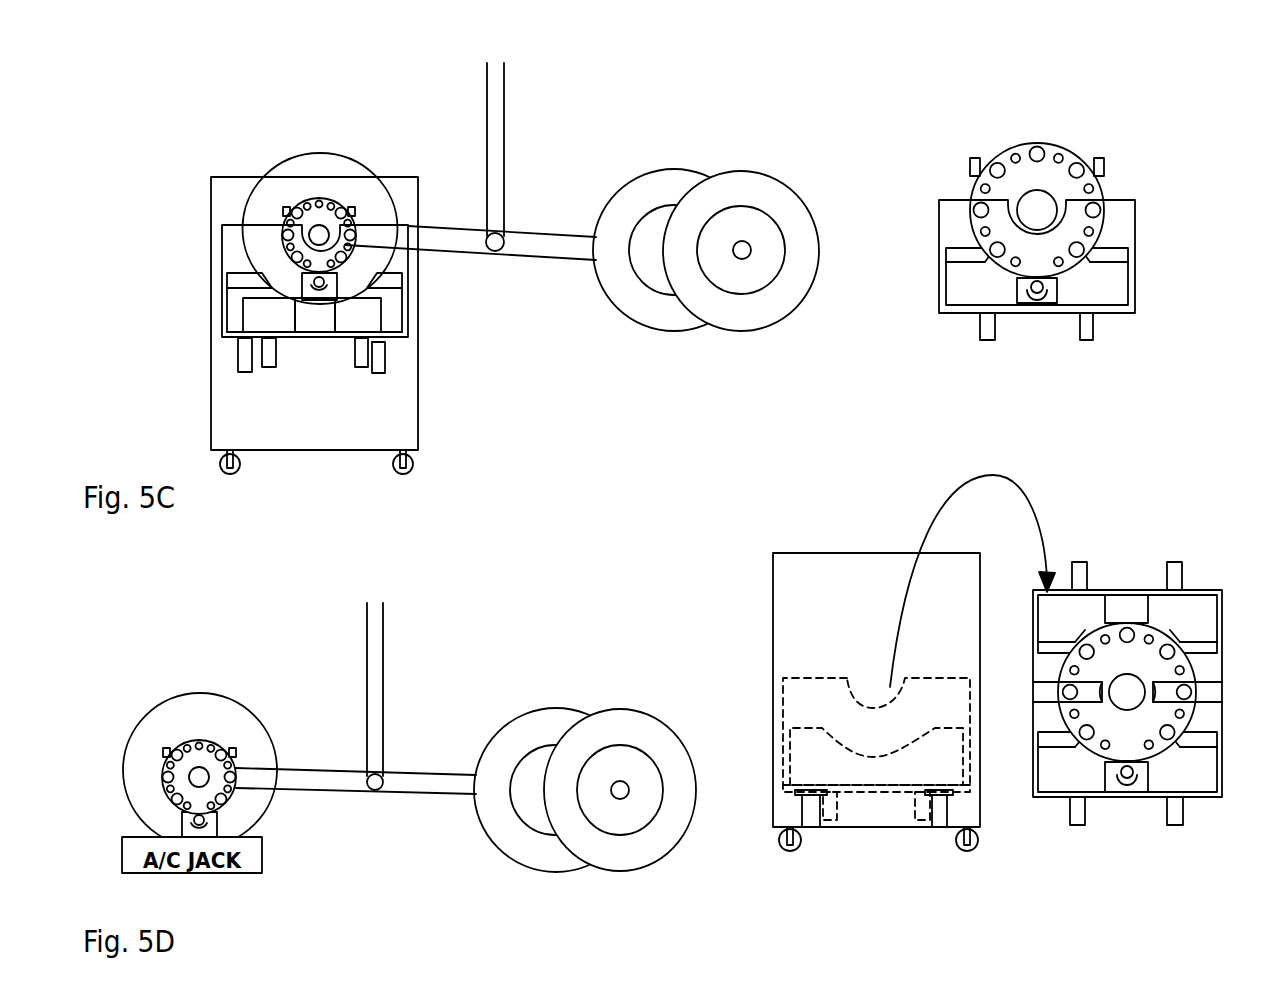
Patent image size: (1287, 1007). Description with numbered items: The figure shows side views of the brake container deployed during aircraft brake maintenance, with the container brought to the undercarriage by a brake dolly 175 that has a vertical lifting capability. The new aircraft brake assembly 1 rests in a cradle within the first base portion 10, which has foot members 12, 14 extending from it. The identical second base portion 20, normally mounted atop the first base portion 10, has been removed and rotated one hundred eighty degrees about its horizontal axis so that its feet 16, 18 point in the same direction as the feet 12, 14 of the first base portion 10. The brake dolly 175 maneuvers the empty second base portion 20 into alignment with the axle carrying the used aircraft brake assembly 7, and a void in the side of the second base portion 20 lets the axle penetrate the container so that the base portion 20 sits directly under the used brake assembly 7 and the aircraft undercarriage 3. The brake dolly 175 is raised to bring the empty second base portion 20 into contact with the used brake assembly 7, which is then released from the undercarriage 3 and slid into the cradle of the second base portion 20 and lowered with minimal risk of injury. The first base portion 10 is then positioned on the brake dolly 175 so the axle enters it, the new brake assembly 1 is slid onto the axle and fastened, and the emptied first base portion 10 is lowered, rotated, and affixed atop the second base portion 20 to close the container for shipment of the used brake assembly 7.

In FIG. 5C, the new aircraft brake assembly 1 is at (315, 198).
In FIG. 5D, the new aircraft brake assembly 1 is at (213, 737).
In FIG. 5C, the aircraft undercarriage 3 is at (1058, 143).
In FIG. 5D, the aircraft undercarriage 3 is at (1131, 748).
In FIG. 5C, the used aircraft brake assembly 7 is at (525, 108).
In FIG. 5D, the used aircraft brake assembly 7 is at (445, 697).
In FIG. 5C, the first base portion 10 is at (222, 298).
In FIG. 5D, the first base portion 10 is at (1208, 588).
In FIG. 5C, the foot member 12 is at (268, 368).
In FIG. 5D, the foot member 12 is at (1078, 557).
In FIG. 5C, the foot member 14 is at (375, 373).
In FIG. 5D, the foot member 14 is at (1172, 558).
In FIG. 5C, the foot member 16 is at (988, 341).
In FIG. 5D, the foot member 16 is at (1079, 829).
In FIG. 5C, the foot member 18 is at (1093, 341).
In FIG. 5D, the foot member 18 is at (1184, 830).
In FIG. 5C, the second base portion 20 is at (1135, 230).
In FIG. 5D, the second base portion 20 is at (1220, 798).
In FIG. 5C, the brake dolly 175 is at (430, 388).
In FIG. 5D, the brake dolly 175 is at (830, 553).